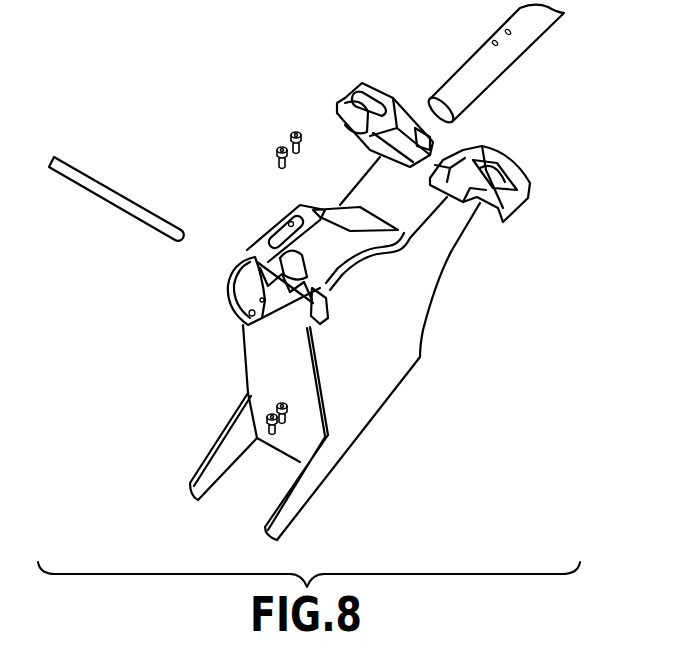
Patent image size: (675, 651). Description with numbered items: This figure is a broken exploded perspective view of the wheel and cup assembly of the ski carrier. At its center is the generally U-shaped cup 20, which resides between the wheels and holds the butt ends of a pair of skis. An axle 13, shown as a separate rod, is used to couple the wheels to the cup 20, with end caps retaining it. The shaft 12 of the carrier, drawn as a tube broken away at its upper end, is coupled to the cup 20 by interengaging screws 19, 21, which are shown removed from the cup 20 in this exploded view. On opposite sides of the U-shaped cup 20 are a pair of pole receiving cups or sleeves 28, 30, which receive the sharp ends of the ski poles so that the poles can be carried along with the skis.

The shaft 12 is at (533, 23).
The axle 13 is at (110, 197).
The screws 19 is at (302, 422).
The U-shaped cup 20 is at (404, 335).
The screws 21 is at (256, 147).
The pole receiving cup 28 is at (347, 110).
The pole receiving cup 30 is at (517, 203).